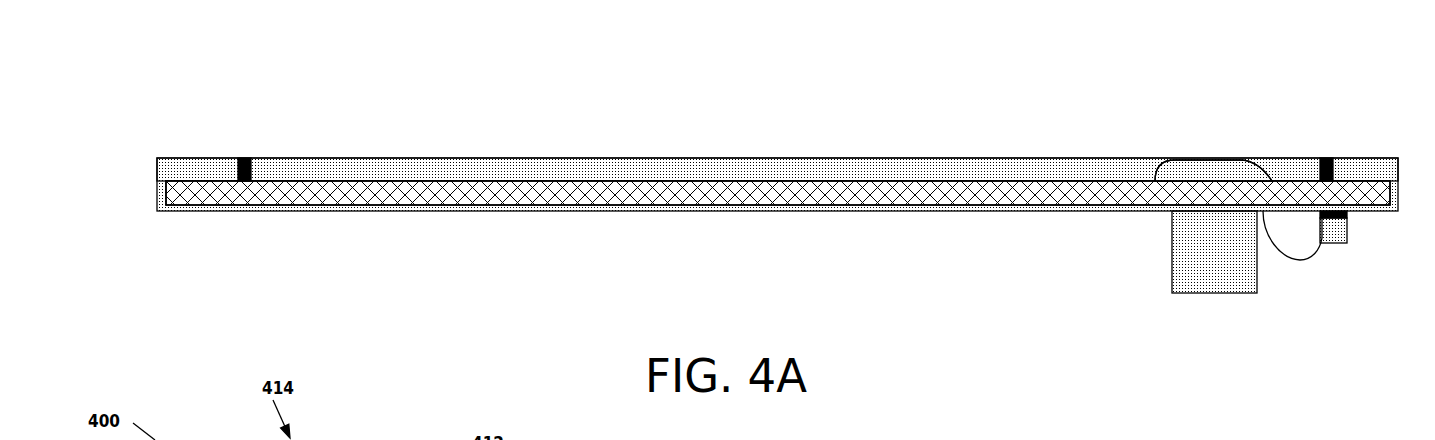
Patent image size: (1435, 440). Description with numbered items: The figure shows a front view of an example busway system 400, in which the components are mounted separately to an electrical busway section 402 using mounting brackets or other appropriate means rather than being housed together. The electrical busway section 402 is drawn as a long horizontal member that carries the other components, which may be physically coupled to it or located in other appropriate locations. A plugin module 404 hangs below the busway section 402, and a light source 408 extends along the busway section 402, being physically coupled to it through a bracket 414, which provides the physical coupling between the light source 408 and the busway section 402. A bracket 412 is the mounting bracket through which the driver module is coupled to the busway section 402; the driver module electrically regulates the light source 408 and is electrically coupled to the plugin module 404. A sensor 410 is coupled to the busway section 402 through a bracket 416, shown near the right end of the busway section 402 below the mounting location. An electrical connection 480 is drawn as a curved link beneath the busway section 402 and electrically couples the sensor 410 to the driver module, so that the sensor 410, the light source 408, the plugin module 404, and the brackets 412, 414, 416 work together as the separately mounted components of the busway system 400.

The busway system 400 is at (135, 106).
The electrical busway section 402 is at (418, 157).
The plugin module 404 is at (1171, 314).
The light source 408 is at (581, 219).
The sensor 410 is at (1345, 258).
The mounting bracket 412 is at (250, 145).
The mounting bracket 414 is at (1318, 144).
The mounting bracket 416 is at (1360, 222).
The electrical connection 480 is at (1301, 278).